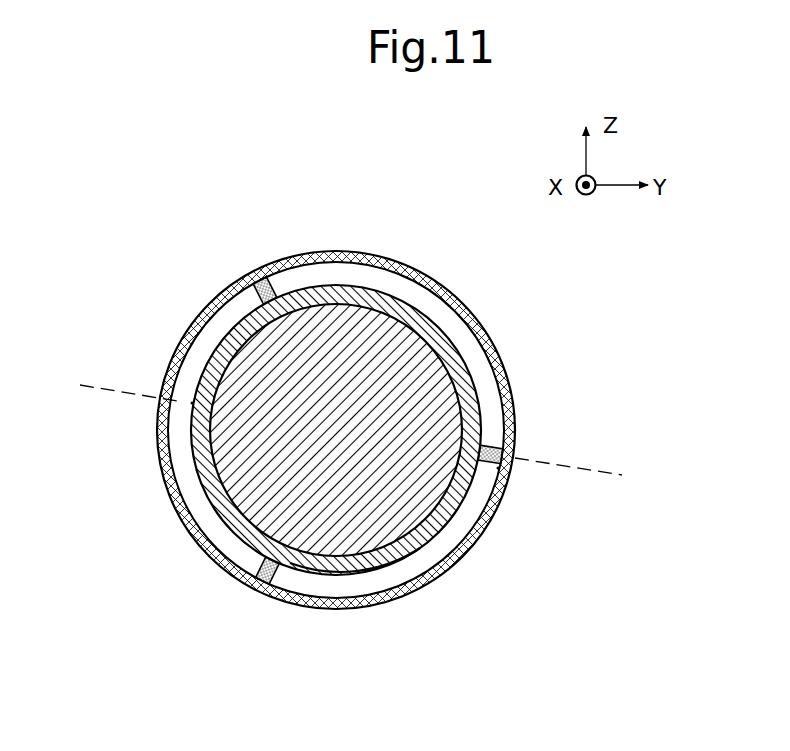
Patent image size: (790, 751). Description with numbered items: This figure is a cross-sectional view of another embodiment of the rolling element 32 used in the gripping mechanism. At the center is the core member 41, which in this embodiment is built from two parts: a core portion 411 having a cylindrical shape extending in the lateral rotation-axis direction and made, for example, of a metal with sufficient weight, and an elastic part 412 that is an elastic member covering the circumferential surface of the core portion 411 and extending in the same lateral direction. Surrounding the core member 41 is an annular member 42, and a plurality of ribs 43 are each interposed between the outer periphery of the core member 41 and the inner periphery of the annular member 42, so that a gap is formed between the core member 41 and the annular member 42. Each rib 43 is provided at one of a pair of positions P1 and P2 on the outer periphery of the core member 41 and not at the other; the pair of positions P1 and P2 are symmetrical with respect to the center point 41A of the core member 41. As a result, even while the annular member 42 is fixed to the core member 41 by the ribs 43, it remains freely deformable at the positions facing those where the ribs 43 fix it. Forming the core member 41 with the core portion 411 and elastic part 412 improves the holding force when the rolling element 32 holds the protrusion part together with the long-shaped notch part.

The rolling element 32 is at (175, 516).
The core member 41 is at (313, 285).
The center point of the core member 41A is at (384, 570).
The core portion 411 is at (345, 330).
The elastic part 412 is at (410, 308).
The annular member 42 is at (211, 308).
The rib 43 is at (257, 284).
The position P1 is at (498, 468).
The position P2 is at (191, 402).